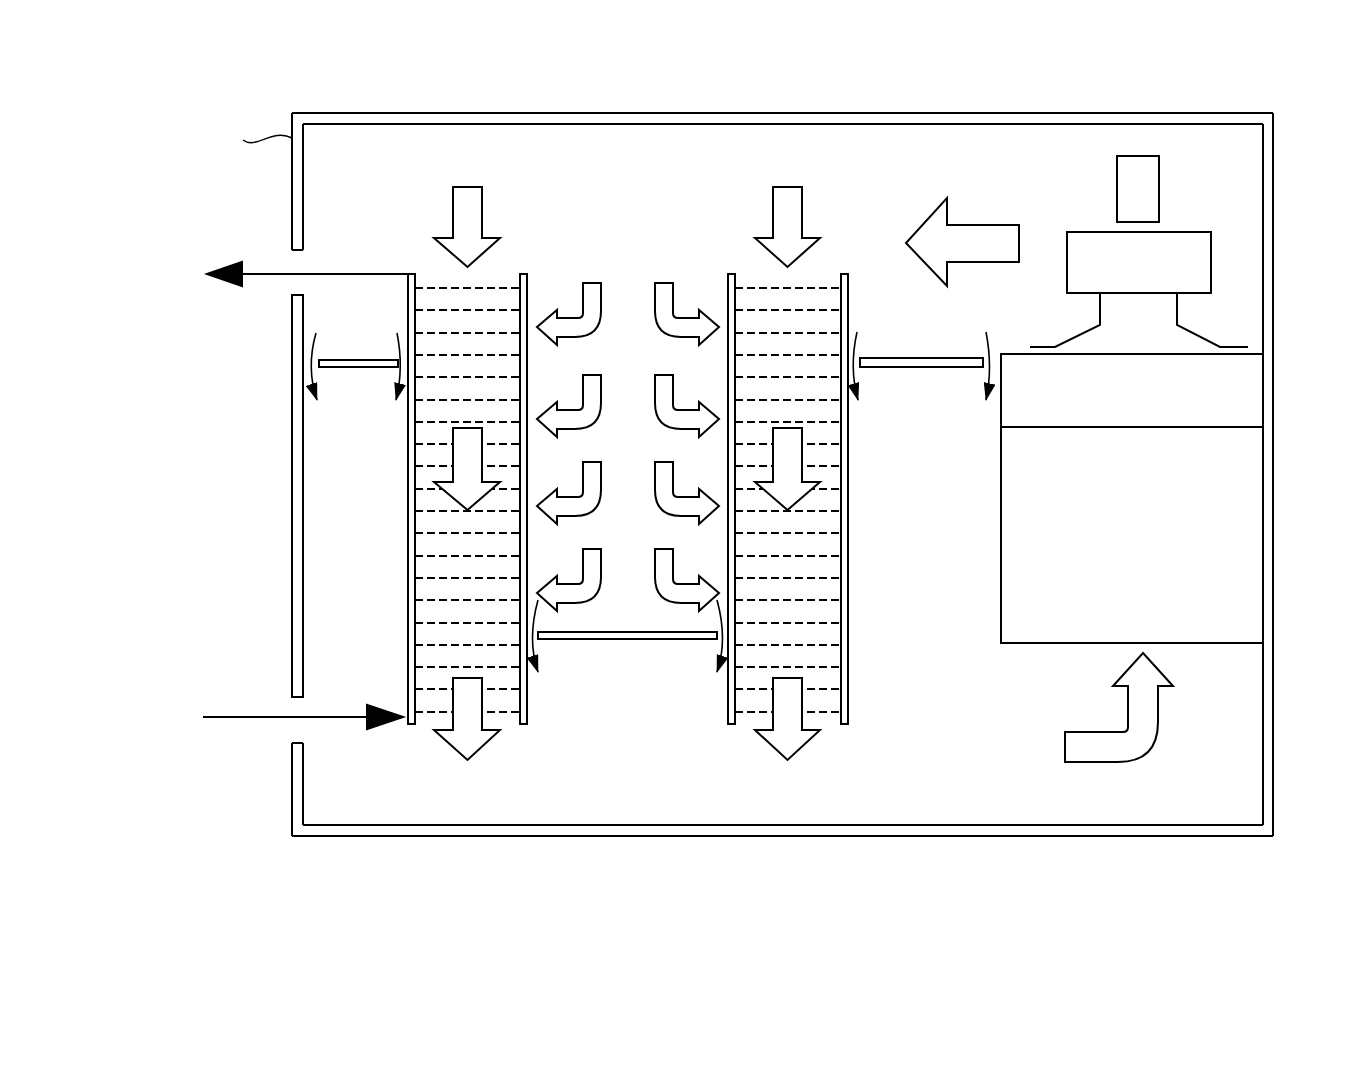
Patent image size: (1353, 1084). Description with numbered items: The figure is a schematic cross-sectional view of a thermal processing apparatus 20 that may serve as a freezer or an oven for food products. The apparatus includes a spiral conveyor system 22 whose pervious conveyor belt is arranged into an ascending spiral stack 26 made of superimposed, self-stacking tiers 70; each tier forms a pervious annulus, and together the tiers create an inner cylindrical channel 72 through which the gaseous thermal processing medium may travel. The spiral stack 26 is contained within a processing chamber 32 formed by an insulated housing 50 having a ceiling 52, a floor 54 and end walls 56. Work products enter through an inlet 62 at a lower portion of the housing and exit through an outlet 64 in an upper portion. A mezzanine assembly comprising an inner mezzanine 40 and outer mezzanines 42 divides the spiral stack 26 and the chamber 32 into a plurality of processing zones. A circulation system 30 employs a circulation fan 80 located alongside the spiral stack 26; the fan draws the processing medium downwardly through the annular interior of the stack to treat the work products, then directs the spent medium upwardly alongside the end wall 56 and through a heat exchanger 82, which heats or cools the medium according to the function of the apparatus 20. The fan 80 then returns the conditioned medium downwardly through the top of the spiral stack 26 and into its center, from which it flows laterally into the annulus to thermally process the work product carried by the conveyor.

The thermal processing apparatus 20 is at (1275, 75).
The spiral conveyor system 22 is at (386, 530).
The spiral stack 26 is at (859, 665).
The circulation system 30 is at (1202, 661).
The processing chamber 32 is at (1152, 93).
The inner mezzanine 40 is at (572, 637).
The outer mezzanine 42 is at (892, 362).
The insulated housing 50 is at (970, 112).
The ceiling 52 is at (651, 114).
The floor 54 is at (447, 836).
The end wall 56 is at (1270, 361).
The inlet 62 is at (246, 728).
The outlet 64 is at (248, 277).
The tiers 70 is at (824, 672).
The inner cylindrical channel 72 is at (627, 290).
The circulation fan 80 is at (1211, 263).
The heat exchanger 82 is at (1230, 533).